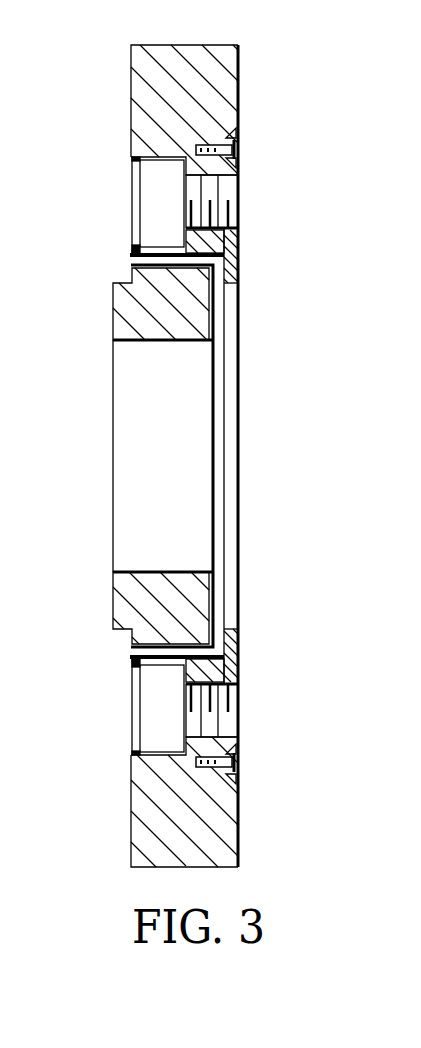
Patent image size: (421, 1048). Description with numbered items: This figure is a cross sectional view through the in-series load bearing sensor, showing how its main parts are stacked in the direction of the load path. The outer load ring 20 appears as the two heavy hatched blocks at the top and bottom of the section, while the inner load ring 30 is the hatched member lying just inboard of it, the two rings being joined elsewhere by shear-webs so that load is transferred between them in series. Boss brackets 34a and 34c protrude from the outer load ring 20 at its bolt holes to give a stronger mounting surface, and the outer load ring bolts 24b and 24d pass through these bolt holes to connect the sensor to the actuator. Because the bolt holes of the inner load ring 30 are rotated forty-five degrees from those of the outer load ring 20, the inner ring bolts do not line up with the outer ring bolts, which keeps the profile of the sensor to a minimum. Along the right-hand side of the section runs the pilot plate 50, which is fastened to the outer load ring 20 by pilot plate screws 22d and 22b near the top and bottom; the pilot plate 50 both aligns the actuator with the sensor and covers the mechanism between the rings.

The outer load ring 20 is at (131, 83).
The pilot plate screw 22b is at (240, 762).
The pilot plate screw 22d is at (240, 152).
The outer load ring bolt 24b is at (131, 200).
The outer load ring bolt 24d is at (131, 725).
The inner load ring 30 is at (113, 322).
The boss bracket 34a is at (131, 252).
The boss bracket 34c is at (131, 655).
The pilot plate 50 is at (240, 248).